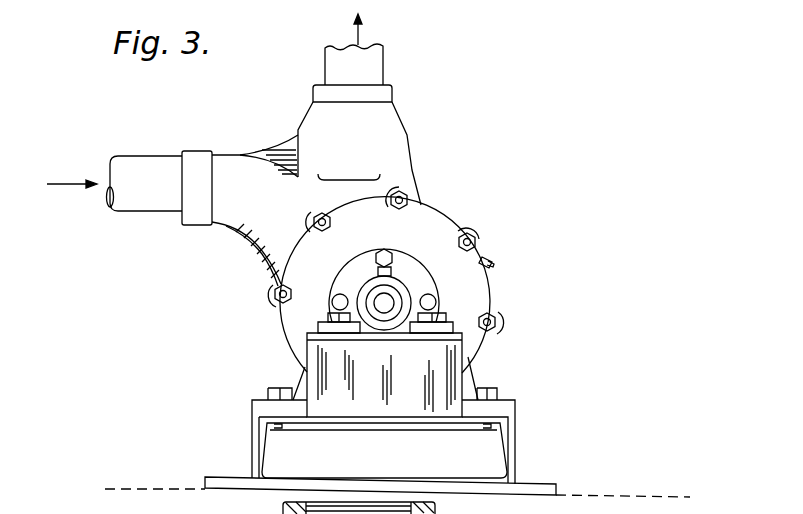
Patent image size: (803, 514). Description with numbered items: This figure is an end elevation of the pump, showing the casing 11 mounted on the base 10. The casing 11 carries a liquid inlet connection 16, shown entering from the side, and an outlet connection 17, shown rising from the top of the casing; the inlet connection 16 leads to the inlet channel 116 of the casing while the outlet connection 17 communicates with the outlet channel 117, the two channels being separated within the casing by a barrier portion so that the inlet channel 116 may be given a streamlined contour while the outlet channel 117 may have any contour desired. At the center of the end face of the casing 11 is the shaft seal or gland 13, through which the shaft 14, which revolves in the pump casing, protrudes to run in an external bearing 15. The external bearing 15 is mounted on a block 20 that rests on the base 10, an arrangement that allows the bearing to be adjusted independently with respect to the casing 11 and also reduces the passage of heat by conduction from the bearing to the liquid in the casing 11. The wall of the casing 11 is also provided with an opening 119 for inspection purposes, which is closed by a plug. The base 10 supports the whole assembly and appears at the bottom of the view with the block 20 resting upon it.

The base 10 is at (517, 448).
The casing 11 is at (472, 207).
The shaft seal or gland 13 is at (340, 265).
The shaft 14 is at (392, 302).
The external bearing 15 is at (399, 282).
The liquid inlet connection 16 is at (143, 211).
The outlet connection 17 is at (325, 60).
The block 20 is at (305, 366).
The inlet channel 116 is at (203, 228).
The outlet channel 117 is at (394, 95).
The opening 119 is at (494, 264).